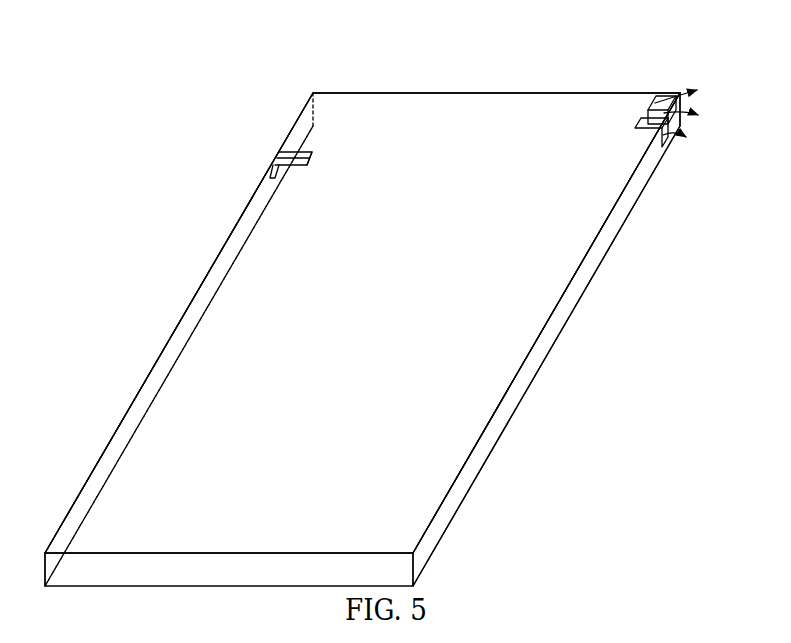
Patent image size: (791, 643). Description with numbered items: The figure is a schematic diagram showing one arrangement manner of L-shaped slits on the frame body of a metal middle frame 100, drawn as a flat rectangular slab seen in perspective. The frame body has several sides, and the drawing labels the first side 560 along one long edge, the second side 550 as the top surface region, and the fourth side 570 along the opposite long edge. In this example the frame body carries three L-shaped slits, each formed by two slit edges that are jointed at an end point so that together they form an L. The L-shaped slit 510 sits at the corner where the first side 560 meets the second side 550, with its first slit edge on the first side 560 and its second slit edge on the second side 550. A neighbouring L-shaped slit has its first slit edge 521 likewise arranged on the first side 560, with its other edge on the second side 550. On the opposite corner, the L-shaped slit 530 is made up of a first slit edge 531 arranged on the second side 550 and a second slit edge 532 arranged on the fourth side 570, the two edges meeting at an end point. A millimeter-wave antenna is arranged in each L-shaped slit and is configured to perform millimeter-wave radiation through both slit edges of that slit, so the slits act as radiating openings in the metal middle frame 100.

The metal middle frame 100 is at (365, 70).
The L-shaped slit 510 is at (655, 106).
The first slit edge 521 is at (645, 130).
The L-shaped slit 530 is at (279, 153).
The first slit edge 531 is at (312, 152).
The second slit edge 532 is at (277, 170).
The second side 550 is at (362, 124).
The first side 560 is at (523, 382).
The fourth side 570 is at (157, 373).